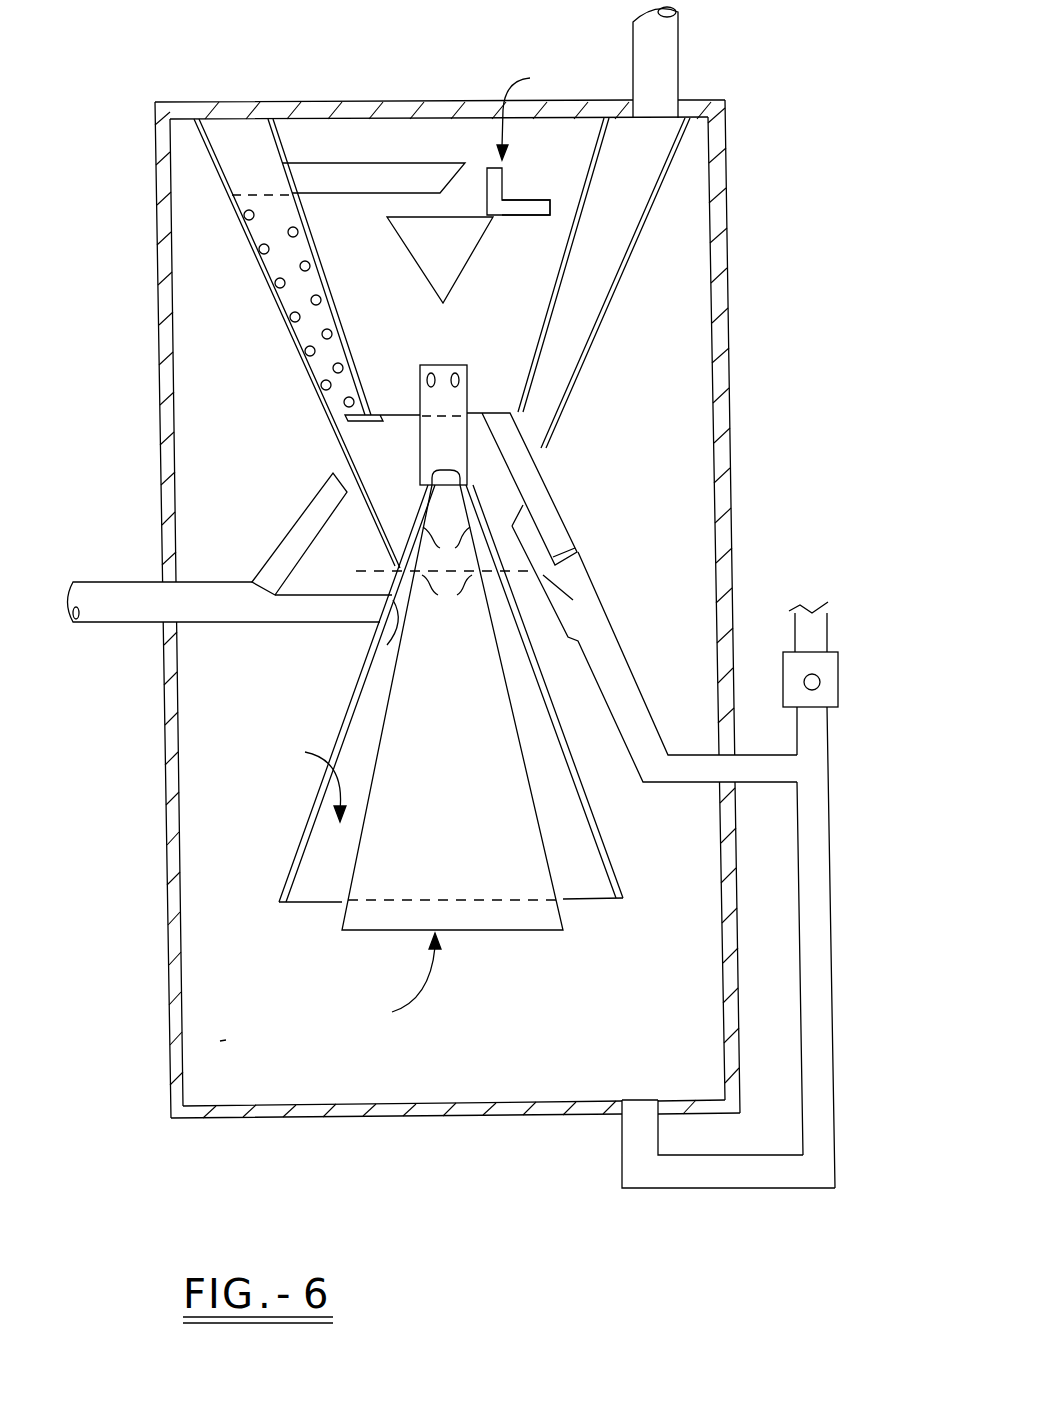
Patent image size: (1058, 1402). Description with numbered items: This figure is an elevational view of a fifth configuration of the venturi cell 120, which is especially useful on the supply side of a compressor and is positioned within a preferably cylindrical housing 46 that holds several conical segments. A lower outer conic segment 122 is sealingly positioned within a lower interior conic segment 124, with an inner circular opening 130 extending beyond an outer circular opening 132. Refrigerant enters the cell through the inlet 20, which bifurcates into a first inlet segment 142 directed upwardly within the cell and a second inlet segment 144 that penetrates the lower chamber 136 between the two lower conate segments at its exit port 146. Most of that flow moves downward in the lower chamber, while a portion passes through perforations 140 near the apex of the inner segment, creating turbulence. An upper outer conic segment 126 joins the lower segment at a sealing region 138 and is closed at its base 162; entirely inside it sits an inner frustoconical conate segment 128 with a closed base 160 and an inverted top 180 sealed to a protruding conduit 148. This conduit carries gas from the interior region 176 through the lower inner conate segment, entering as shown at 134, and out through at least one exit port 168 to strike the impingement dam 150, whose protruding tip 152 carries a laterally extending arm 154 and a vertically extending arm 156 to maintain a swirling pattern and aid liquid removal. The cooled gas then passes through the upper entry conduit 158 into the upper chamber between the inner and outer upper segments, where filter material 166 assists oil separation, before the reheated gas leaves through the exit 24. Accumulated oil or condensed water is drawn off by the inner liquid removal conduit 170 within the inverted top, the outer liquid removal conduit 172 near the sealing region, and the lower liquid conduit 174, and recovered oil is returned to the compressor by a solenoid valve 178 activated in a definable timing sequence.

The inlet 20 is at (223, 588).
The exit 24 is at (625, 30).
The housing 46 is at (158, 396).
The venturi cell 120 is at (140, 240).
The lower outer conic segment 122 is at (355, 855).
The lower interior conic segment 124 is at (310, 815).
The upper outer conic segment 126 is at (608, 326).
The inner frustoconical conate segment 128 is at (562, 278).
The inner circular opening 130 is at (360, 935).
The outer circular opening 132 is at (310, 902).
The entry of refrigerant into lower inner conate segment 134 is at (390, 982).
The lower chamber 136 is at (300, 781).
The sealing region 138 is at (417, 576).
The perforations 140 is at (430, 548).
The first inlet segment 142 is at (318, 505).
The second inlet segment 144 is at (297, 612).
The exit port 146 is at (394, 622).
The protruding conduit 148 is at (467, 380).
The impingement dam 150 is at (405, 248).
The protruding tip 152 is at (536, 112).
The laterally extending arm 154 is at (545, 214).
The vertically extending arm 156 is at (502, 180).
The upper entry conduit 158 is at (380, 163).
The closed base 160 is at (437, 110).
The base 162 is at (658, 118).
The filter material 166 is at (295, 310).
The exit port 168 is at (431, 374).
The inner liquid removal conduit 170 is at (540, 500).
The outer liquid removal conduit 172 is at (535, 567).
The lower liquid conduit 174 is at (630, 1145).
The interior region 176 is at (225, 1040).
The solenoid valve 178 is at (840, 682).
The inverted top 180 is at (383, 418).